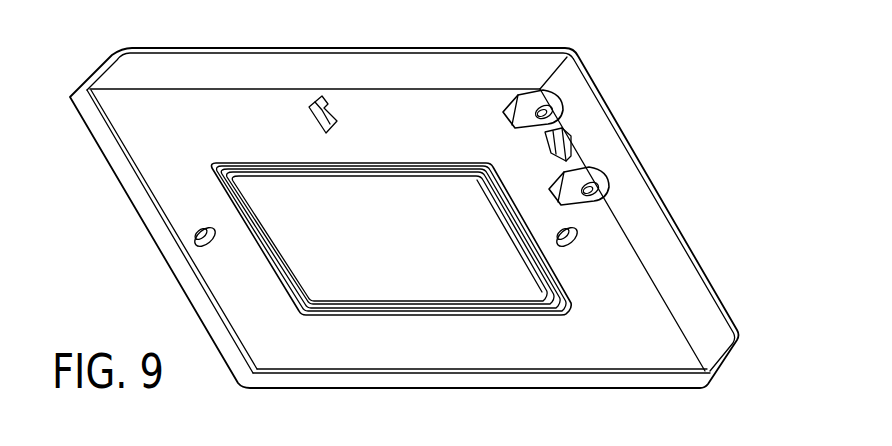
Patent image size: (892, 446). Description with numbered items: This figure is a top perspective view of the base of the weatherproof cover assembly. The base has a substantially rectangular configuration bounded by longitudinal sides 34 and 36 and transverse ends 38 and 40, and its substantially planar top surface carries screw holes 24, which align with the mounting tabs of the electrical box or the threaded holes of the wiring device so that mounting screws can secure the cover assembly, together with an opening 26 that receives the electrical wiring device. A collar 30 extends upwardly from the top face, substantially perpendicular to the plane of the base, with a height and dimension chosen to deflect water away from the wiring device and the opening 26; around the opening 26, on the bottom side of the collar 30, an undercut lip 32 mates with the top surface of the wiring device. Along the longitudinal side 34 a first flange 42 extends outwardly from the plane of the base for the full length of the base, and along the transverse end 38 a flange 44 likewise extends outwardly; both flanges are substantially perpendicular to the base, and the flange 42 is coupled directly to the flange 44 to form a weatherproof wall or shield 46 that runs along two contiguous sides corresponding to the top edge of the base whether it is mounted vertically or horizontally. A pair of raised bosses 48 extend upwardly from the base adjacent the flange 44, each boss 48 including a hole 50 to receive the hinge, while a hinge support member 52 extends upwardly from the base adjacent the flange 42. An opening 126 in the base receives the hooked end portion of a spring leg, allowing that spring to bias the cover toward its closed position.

The screw holes 24 is at (203, 226).
The opening 26 is at (398, 208).
The collar 30 is at (314, 168).
The undercut lip 32 is at (312, 179).
The longitudinal side 34 is at (158, 92).
The longitudinal side 36 is at (360, 373).
The transverse end 38 is at (674, 317).
The transverse end 40 is at (176, 277).
The first flange 42 is at (428, 72).
The flange 44 is at (676, 270).
The weatherproof wall or shield 46 is at (609, 114).
The raised bosses 48 is at (541, 84).
The hole 50 is at (556, 113).
The hinge support member 52 is at (316, 86).
The opening 126 is at (578, 135).